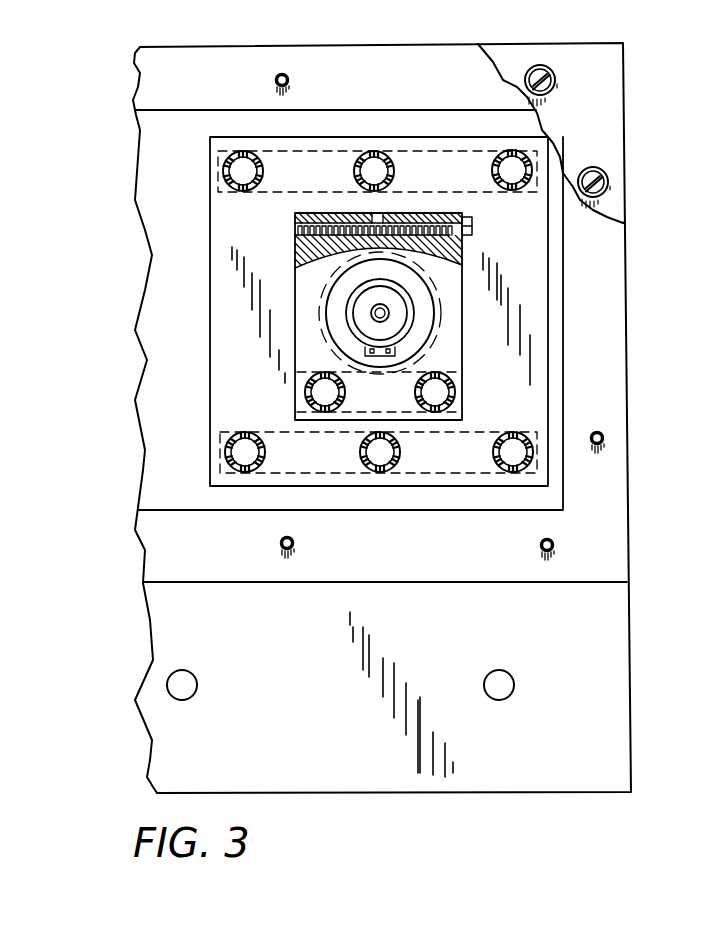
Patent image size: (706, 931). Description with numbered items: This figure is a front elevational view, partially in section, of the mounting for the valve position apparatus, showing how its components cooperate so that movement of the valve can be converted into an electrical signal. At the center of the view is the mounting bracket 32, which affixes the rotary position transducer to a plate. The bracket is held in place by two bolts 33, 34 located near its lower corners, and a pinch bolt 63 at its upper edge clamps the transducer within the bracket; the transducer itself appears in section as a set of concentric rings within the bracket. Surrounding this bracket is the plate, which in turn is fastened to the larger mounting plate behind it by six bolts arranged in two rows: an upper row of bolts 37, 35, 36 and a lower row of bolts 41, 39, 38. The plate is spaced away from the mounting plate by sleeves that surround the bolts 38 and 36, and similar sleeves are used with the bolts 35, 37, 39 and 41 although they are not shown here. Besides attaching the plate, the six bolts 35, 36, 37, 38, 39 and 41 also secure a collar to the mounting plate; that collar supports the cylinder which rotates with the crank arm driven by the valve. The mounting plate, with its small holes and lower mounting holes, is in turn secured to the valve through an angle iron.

The mounting bracket 32 is at (450, 360).
The bolt 33 is at (304, 392).
The bolt 34 is at (456, 394).
The bolt 35 is at (364, 152).
The bolt 36 is at (533, 164).
The bolt 37 is at (222, 172).
The bolt 38 is at (534, 452).
The bolt 39 is at (383, 473).
The bolt 41 is at (224, 452).
The pinch bolt 63 is at (473, 226).